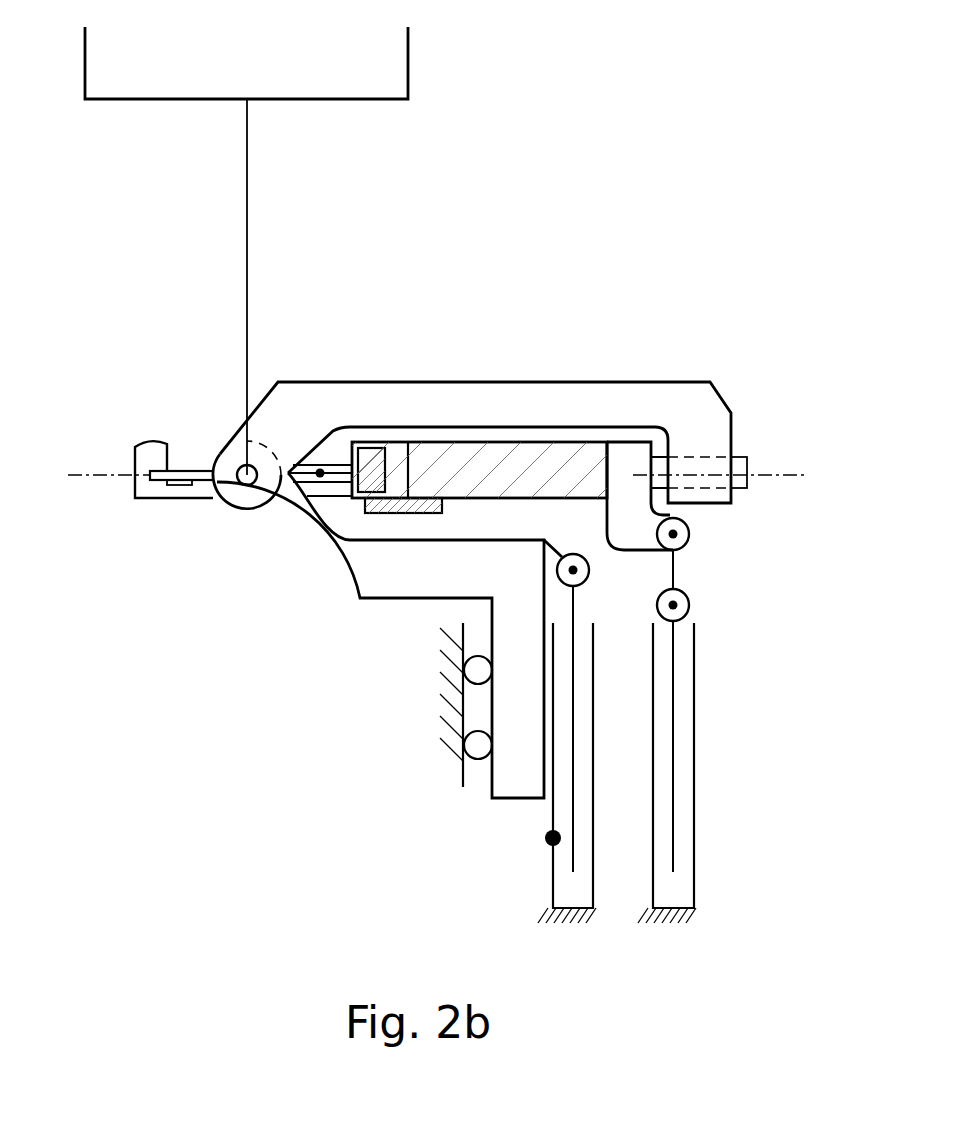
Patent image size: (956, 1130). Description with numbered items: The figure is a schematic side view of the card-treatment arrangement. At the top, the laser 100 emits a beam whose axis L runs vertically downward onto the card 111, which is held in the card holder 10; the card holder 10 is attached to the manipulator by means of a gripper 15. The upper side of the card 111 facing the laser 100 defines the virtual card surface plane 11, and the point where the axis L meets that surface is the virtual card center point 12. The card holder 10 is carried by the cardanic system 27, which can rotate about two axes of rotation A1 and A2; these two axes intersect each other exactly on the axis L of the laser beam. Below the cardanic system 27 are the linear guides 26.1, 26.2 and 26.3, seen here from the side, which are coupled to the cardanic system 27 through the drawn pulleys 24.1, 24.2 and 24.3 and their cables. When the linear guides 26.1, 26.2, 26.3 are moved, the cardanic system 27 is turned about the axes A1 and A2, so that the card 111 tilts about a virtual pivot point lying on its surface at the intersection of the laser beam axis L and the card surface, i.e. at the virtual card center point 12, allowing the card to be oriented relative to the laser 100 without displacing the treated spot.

The laser 100 is at (397, 58).
The axis of the laser beam L is at (248, 207).
The card holder 10 is at (147, 488).
The virtual card surface plane 11 is at (186, 478).
The card 111 is at (320, 473).
The virtual card center point 12 is at (240, 505).
The axis of rotation A1 is at (246, 470).
The axis of rotation A2 is at (780, 475).
The gripper 15 is at (490, 462).
The cardanic system 27 is at (422, 395).
The first pulley 24.1 is at (573, 570).
The second pulley 24.2 is at (680, 534).
The third pulley 24.3 is at (680, 605).
The linear guide 26.1 is at (573, 858).
The linear guide 26.2 is at (673, 845).
The linear guide 26.3 is at (694, 817).